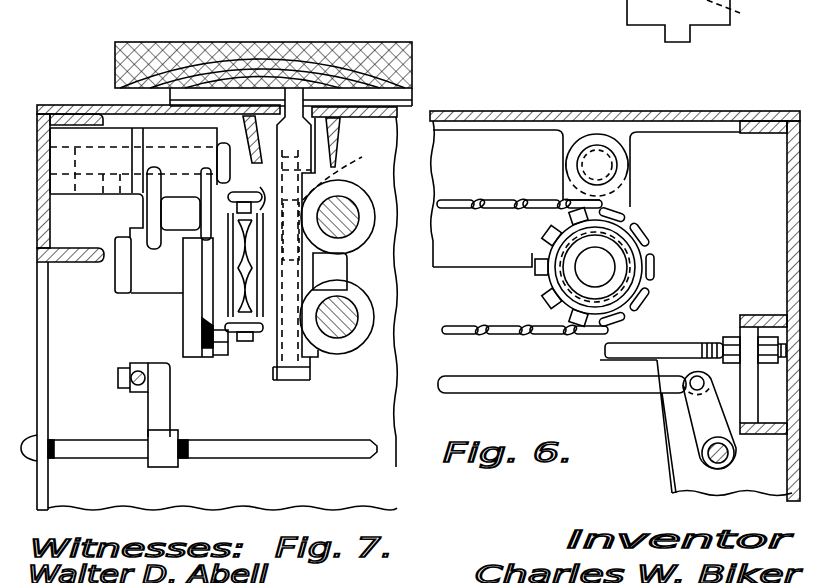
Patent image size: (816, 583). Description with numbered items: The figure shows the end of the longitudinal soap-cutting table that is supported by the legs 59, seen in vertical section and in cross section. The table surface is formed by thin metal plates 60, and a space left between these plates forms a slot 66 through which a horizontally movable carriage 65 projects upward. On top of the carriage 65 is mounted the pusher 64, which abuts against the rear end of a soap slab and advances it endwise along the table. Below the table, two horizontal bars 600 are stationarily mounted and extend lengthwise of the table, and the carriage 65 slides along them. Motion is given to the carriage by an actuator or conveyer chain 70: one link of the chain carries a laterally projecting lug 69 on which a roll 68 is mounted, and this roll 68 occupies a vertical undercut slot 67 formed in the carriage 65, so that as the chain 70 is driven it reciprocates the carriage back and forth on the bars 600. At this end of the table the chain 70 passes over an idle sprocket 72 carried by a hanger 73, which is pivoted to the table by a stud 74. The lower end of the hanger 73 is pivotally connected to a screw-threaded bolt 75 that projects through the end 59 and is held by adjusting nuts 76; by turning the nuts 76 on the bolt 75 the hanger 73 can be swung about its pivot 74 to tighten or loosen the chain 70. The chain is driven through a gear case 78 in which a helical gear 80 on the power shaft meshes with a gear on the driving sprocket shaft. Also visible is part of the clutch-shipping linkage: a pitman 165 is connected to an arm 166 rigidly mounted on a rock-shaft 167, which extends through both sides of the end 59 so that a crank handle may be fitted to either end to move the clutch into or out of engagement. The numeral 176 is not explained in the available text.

In FIG. 7, the legs 59 is at (397, 487).
In FIG. 6, the legs 59 is at (666, 490).
In FIG. 7, the thin metal plates 60 is at (90, 105).
In FIG. 6, the thin metal plates 60 is at (505, 111).
In FIG. 7, the pusher 64 is at (206, 44).
In FIG. 7, the carriage 65 is at (345, 354).
In FIG. 7, the slot 66 is at (309, 90).
In FIG. 7, the vertical undercut slot 67 is at (268, 362).
In FIG. 7, the roll 68 is at (338, 124).
In FIG. 7, the lug 69 is at (342, 178).
In FIG. 7, the actuator or conveyer chain 70 is at (233, 198).
In FIG. 6, the actuator or conveyer chain 70 is at (490, 198).
In FIG. 7, the idle sprocket 72 is at (183, 312).
In FIG. 6, the idle sprocket 72 is at (532, 272).
In FIG. 7, the hanger 73 is at (133, 297).
In FIG. 6, the hanger 73 is at (630, 197).
In FIG. 7, the stud 74 is at (133, 182).
In FIG. 6, the stud 74 is at (630, 167).
In FIG. 7, the screw-threaded bolt 75 is at (211, 355).
In FIG. 6, the screw-threaded bolt 75 is at (670, 346).
In FIG. 6, the adjusting nuts 76 is at (728, 343).
In FIG. 6, the gear case 78 is at (634, 14).
In FIG. 6, the helical gear 80 is at (740, 13).
In FIG. 7, the pitman 165 is at (140, 372).
In FIG. 6, the pitman 165 is at (458, 380).
In FIG. 7, the arm 166 is at (157, 412).
In FIG. 6, the arm 166 is at (684, 411).
In FIG. 7, the rock-shaft 167 is at (257, 452).
In FIG. 6, the rock-shaft 167 is at (727, 457).
In FIG. 6, the arm 176 is at (552, 11).
In FIG. 7, the horizontal bars 600 is at (343, 222).